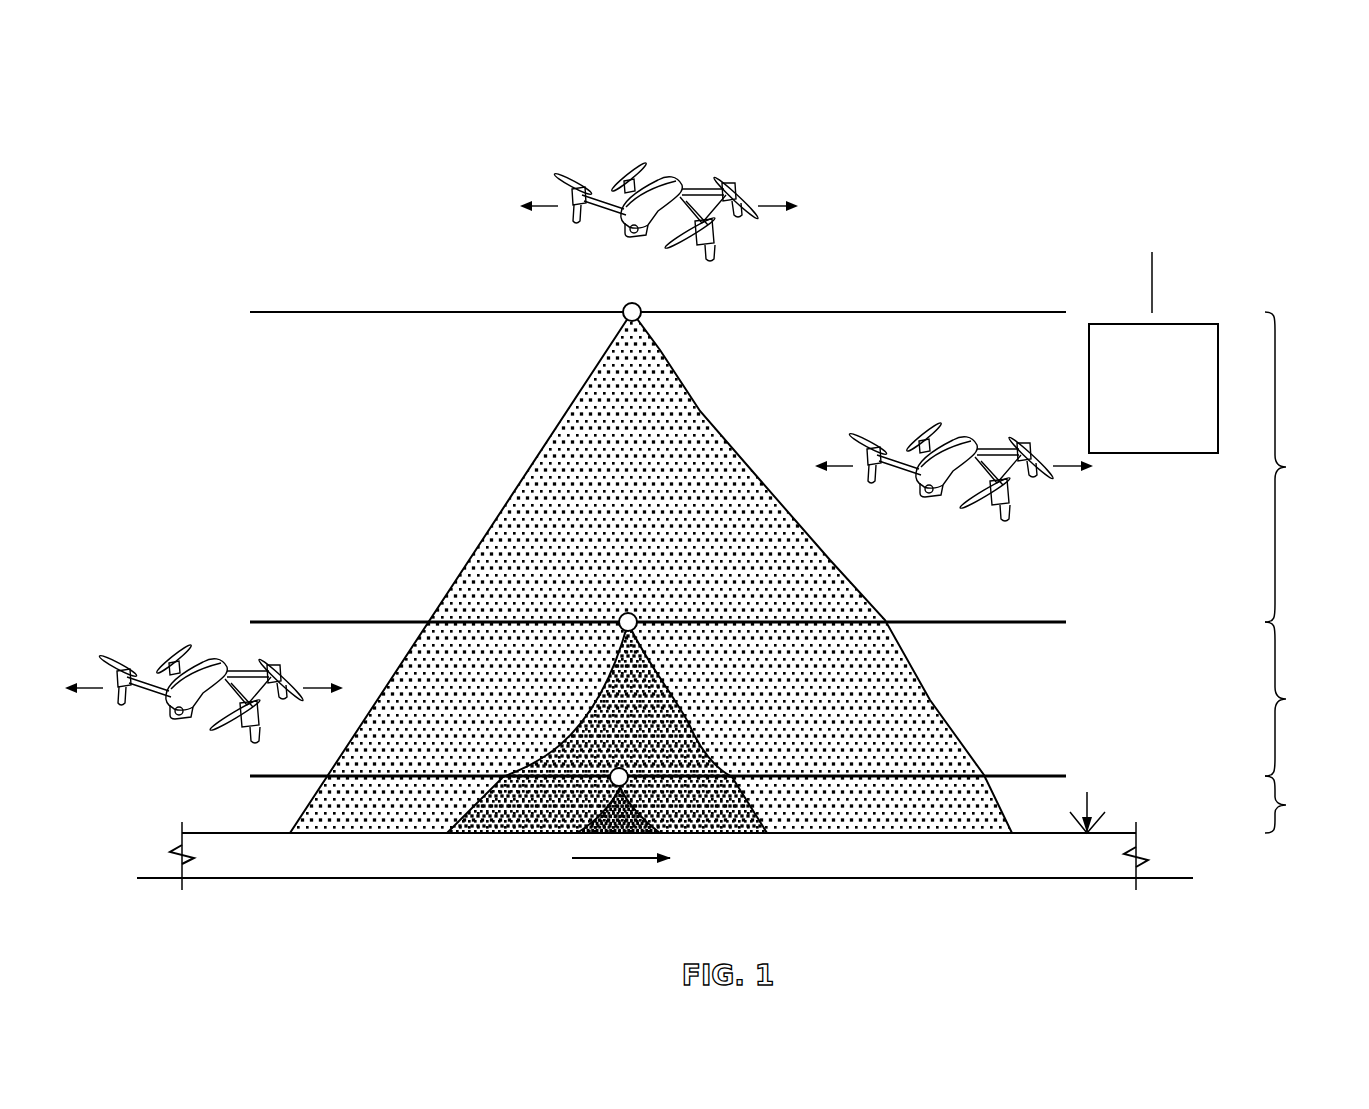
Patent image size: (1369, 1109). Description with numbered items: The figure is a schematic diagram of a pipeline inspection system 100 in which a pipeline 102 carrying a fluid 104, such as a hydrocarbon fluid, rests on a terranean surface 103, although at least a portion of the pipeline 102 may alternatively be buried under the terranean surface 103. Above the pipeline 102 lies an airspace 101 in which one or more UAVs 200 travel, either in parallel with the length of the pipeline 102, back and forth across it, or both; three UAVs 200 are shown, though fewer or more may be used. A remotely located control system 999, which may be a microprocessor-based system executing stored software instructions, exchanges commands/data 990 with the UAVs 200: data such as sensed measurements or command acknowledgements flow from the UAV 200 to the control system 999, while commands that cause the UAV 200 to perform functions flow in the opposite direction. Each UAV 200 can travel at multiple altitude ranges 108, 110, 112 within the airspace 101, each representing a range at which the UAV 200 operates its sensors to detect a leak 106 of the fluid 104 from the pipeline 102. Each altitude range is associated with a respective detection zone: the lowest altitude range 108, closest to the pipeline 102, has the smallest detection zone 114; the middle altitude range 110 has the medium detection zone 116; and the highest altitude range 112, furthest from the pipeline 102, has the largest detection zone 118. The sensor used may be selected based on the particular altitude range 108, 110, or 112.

The pipeline inspection system 100 is at (232, 100).
The airspace 101 is at (338, 290).
The pipeline 102 is at (940, 888).
The terranean surface 103 is at (1173, 882).
The fluid 104 is at (622, 865).
The leak 106 is at (1088, 808).
The altitude range 108 is at (1297, 804).
The altitude range 110 is at (1300, 699).
The altitude range 112 is at (1300, 467).
The detection zone 114 is at (637, 812).
The detection zone 116 is at (530, 740).
The detection zone 118 is at (510, 530).
The UAV 200 is at (668, 168).
The commands/data 990 is at (1155, 282).
The control system 999 is at (1176, 402).